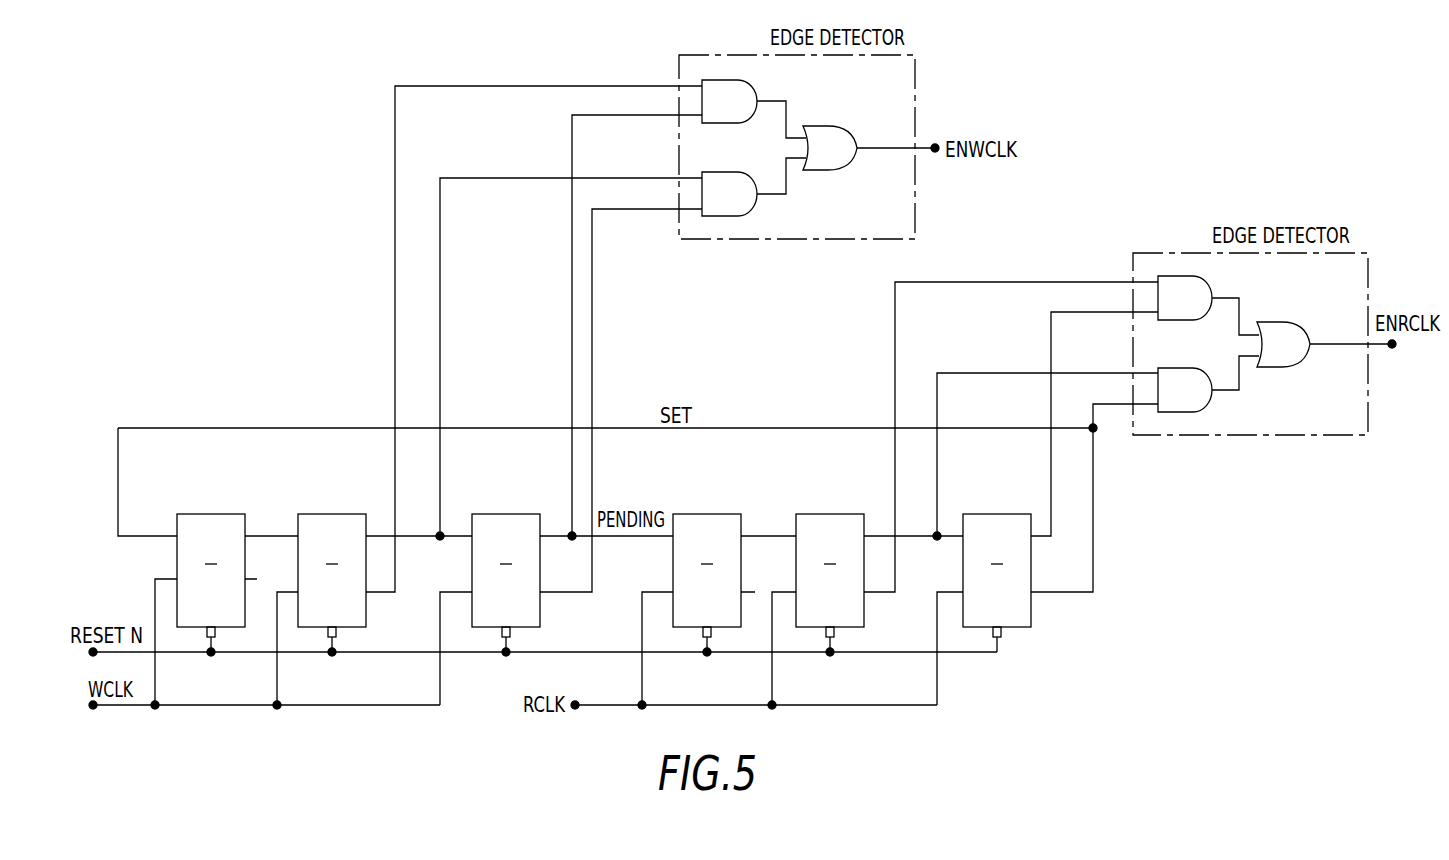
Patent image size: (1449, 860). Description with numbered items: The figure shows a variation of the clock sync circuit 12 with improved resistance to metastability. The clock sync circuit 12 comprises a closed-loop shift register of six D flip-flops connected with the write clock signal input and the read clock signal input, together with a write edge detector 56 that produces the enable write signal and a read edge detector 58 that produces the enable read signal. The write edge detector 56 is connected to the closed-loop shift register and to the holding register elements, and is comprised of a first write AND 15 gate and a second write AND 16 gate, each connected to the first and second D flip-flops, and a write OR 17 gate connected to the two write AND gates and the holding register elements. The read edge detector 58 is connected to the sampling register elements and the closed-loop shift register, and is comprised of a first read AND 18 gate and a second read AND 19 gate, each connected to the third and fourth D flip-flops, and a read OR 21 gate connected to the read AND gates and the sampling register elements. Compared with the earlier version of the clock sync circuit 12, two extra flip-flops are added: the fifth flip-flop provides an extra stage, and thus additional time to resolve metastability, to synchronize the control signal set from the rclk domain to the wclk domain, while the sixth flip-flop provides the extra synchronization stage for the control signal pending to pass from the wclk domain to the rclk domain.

The clock sync circuit 12 is at (1133, 570).
The first write AND gate 15 is at (726, 86).
The second write AND gate 16 is at (728, 212).
The write OR gate 17 is at (826, 137).
The first read AND gate 18 is at (1178, 283).
The second read AND gate 19 is at (1183, 403).
The read OR gate 21 is at (1277, 327).
The write edge detector 56 is at (913, 196).
The read edge detector 58 is at (1310, 428).